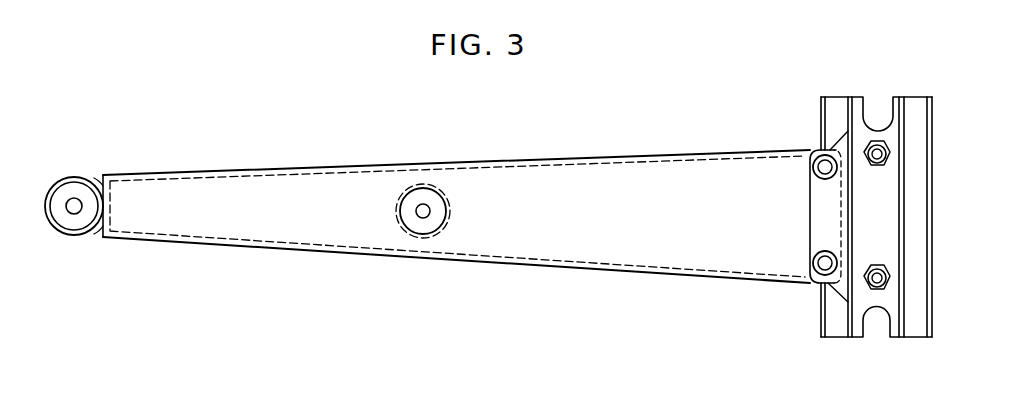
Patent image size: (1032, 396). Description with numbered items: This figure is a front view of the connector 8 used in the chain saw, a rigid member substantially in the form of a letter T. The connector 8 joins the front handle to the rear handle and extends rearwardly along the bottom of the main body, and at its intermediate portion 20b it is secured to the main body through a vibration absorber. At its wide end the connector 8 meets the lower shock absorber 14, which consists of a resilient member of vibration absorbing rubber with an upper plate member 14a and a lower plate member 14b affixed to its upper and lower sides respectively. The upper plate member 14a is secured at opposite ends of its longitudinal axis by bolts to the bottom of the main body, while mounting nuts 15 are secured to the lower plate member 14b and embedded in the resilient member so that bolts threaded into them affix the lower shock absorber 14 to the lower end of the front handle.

The connector 8 is at (609, 212).
The intermediate portion 20b is at (423, 223).
The lower shock absorber 14 is at (916, 322).
The upper plate member 14a is at (821, 309).
The lower plate member 14b is at (848, 322).
The mounting nuts 15 is at (877, 168).